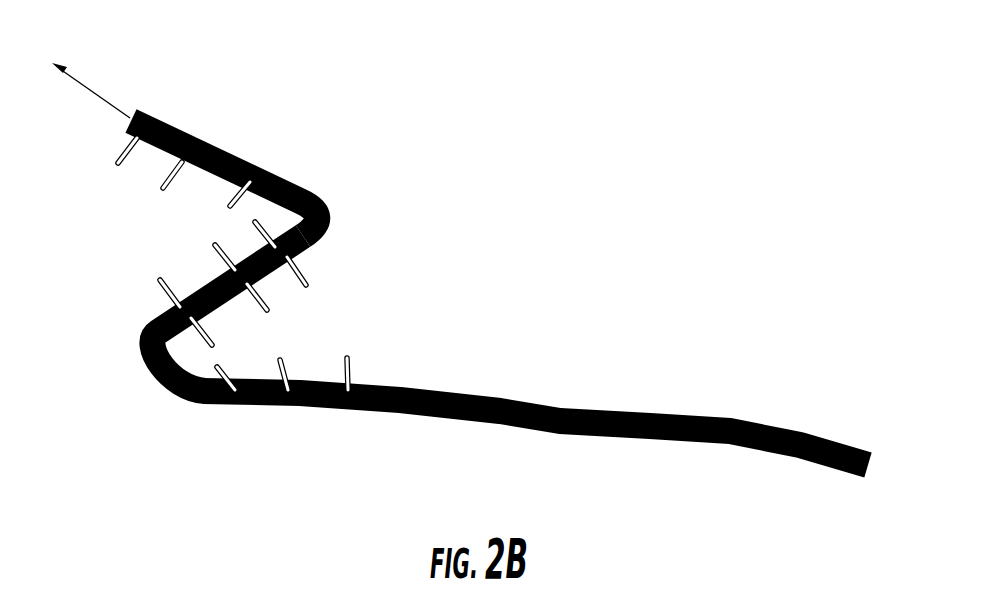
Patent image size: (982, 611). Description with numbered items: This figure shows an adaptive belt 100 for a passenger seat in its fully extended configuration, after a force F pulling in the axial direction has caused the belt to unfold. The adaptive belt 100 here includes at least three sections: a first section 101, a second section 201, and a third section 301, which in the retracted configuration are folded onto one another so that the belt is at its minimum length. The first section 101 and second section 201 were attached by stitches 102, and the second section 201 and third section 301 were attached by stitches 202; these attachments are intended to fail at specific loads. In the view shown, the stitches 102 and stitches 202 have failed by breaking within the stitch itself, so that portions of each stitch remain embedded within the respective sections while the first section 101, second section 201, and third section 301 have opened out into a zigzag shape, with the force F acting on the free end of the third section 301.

The adaptive belt 100 is at (720, 199).
The first section 101 is at (683, 440).
The stitches 102 is at (267, 308).
The second section 201 is at (310, 247).
The stitches 202 is at (213, 248).
The third section 301 is at (215, 145).
The force F is at (90, 87).